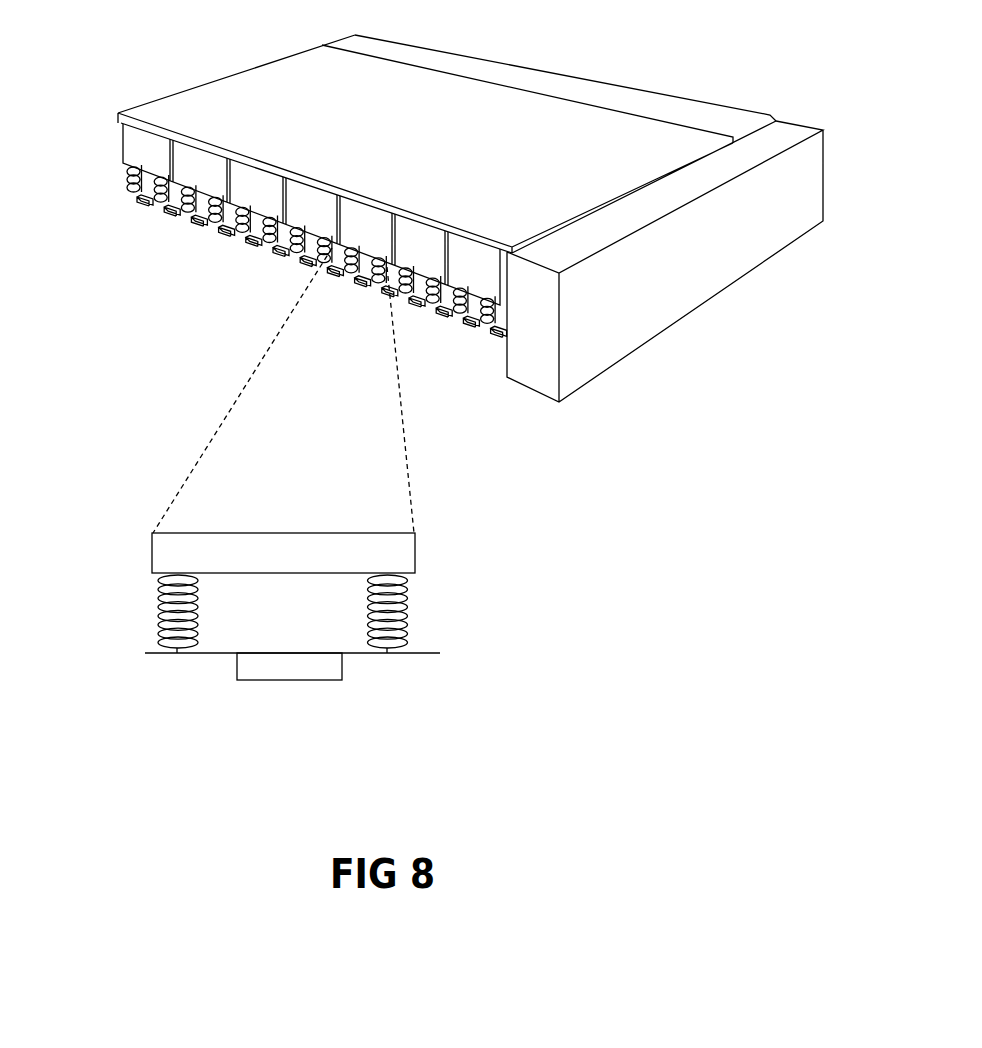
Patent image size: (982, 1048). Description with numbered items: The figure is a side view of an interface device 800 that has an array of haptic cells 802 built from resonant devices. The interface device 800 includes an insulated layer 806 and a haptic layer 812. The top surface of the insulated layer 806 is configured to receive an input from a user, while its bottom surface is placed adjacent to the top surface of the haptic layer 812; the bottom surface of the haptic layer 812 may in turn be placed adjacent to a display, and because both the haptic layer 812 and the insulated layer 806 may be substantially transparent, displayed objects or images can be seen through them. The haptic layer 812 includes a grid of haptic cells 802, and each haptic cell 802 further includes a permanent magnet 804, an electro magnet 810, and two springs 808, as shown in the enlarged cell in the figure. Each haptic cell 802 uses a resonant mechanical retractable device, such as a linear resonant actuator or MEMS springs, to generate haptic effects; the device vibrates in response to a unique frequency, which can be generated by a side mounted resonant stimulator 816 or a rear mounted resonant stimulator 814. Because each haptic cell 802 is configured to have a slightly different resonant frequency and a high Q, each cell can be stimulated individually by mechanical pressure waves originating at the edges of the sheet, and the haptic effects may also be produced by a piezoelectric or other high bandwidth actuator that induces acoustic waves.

The interface device 800 is at (580, 569).
The haptic cell 802 is at (104, 586).
The permanent magnet 804 is at (293, 561).
The insulated layer 806 is at (180, 100).
The springs 808 is at (365, 615).
The electro magnet 810 is at (288, 665).
The haptic layer 812 is at (121, 122).
The rear mounted resonant stimulator 814 is at (638, 102).
The side mounted resonant stimulator 816 is at (613, 308).